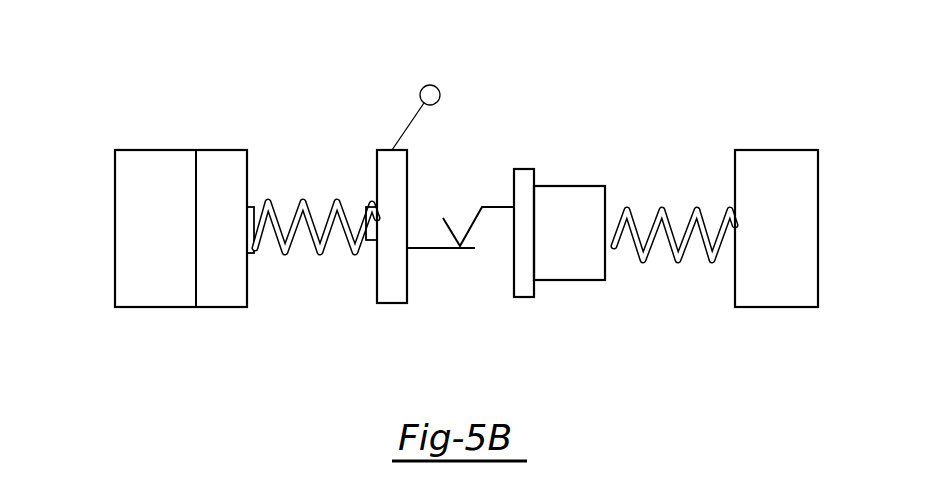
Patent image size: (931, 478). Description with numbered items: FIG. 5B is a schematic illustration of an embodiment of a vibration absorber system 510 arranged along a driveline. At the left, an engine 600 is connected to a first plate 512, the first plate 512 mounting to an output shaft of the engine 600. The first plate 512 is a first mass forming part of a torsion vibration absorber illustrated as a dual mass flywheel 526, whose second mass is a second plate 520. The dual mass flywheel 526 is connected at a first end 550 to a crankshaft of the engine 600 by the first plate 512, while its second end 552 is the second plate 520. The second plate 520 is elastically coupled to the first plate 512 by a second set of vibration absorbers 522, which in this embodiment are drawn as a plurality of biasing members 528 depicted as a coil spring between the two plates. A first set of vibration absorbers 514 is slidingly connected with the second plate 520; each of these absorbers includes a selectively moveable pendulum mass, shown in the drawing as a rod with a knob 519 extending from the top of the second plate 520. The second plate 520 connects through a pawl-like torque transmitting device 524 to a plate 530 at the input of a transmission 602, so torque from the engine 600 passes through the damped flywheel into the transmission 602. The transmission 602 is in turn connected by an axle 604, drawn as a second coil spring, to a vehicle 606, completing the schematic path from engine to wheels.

The transmission system 510 is at (168, 87).
The engine 600 is at (112, 228).
The first plate 512 is at (221, 307).
The first end 550 is at (249, 122).
The biasing members 528 is at (312, 245).
The dual mass flywheel 526 is at (284, 170).
The second set of vibration absorbers 522 is at (323, 176).
The second plate 520 is at (376, 277).
The first set of vibration absorbers 514 is at (412, 121).
The knob 519 is at (441, 94).
The torque transmitting device 524 is at (450, 186).
The plate 530 is at (512, 273).
The second end 552 is at (541, 316).
The transmission 602 is at (588, 186).
The axle 604 is at (686, 216).
The vehicle 606 is at (772, 150).